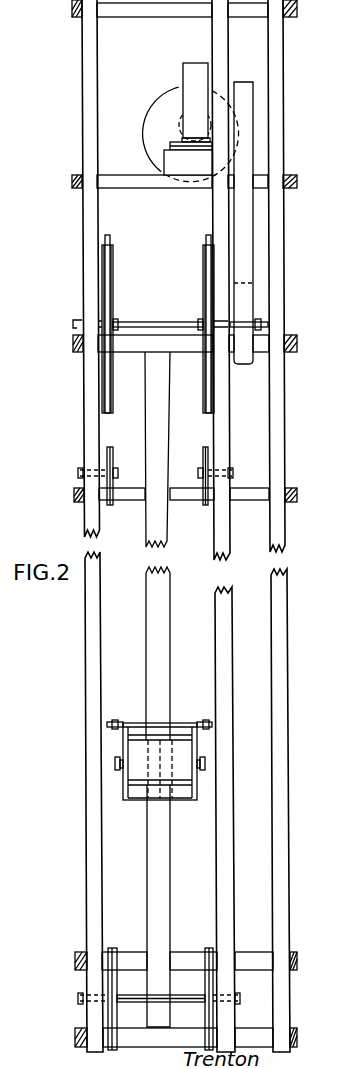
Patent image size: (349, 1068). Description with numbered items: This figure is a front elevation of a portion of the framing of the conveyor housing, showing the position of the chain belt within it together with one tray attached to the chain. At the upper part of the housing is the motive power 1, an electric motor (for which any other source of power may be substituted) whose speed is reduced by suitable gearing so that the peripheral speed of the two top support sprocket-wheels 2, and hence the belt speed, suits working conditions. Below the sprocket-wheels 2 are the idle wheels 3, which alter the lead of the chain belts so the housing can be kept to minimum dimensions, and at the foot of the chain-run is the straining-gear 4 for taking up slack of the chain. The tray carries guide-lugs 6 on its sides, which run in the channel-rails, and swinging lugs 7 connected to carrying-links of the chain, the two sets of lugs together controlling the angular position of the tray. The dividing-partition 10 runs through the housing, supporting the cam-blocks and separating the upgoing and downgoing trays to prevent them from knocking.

The motive power 1 is at (198, 93).
The sprocket-wheels 2 is at (113, 290).
The idle wheels 3 is at (114, 452).
The straining-gear 4 is at (123, 995).
The guide-lugs 6 is at (114, 763).
The swinging lugs 7 is at (117, 722).
The dividing-partition 10 is at (158, 689).